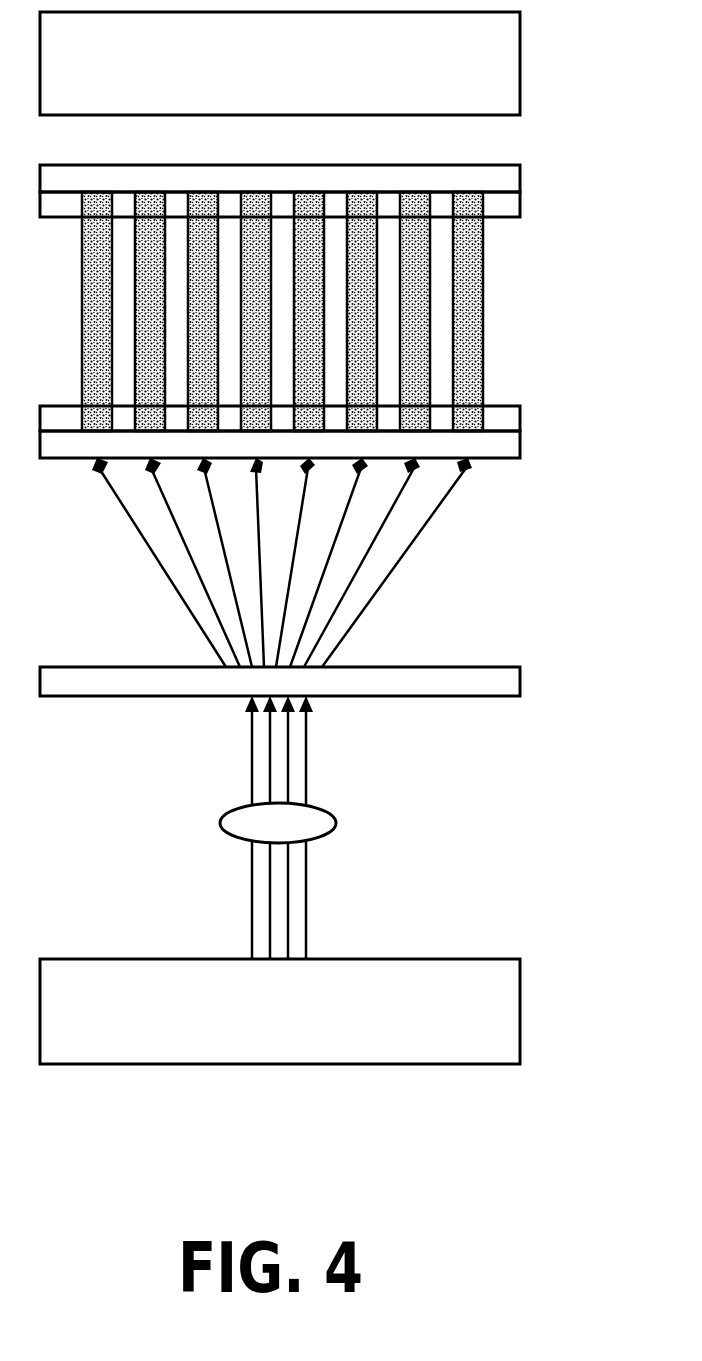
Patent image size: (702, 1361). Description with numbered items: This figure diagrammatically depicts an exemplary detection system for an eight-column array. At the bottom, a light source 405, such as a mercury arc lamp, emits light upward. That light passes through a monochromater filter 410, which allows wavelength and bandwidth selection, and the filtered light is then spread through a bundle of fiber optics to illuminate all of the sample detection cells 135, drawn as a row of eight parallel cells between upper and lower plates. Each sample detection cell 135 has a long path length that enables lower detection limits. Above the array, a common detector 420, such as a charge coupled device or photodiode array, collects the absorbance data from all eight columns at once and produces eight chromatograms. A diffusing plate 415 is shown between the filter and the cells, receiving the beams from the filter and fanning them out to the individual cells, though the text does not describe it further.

The common detector 420 is at (522, 40).
The sample detection cell 135 is at (533, 305).
The diffuser plate 415 is at (520, 680).
The monochromater filter 410 is at (336, 823).
The light source 405 is at (522, 990).